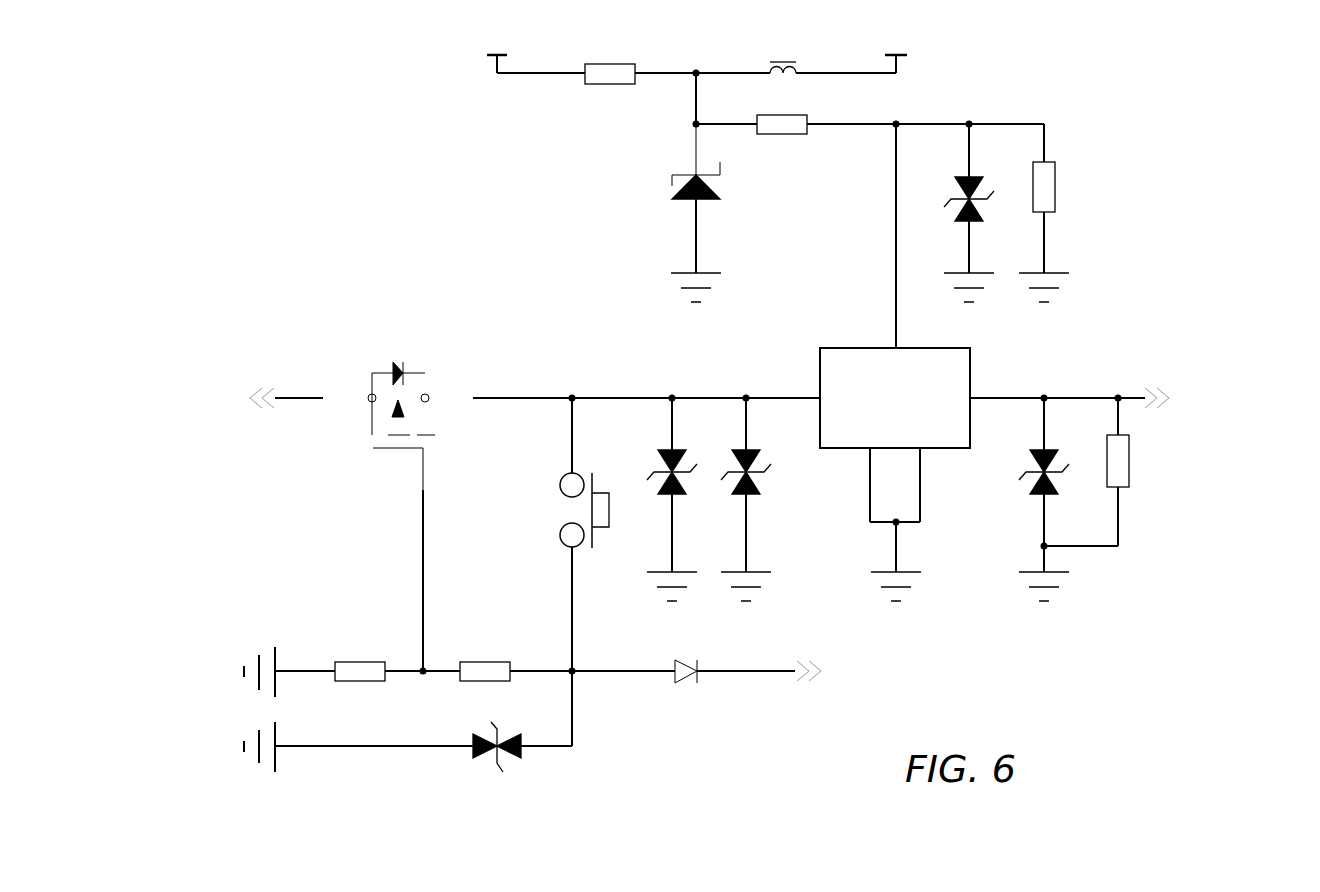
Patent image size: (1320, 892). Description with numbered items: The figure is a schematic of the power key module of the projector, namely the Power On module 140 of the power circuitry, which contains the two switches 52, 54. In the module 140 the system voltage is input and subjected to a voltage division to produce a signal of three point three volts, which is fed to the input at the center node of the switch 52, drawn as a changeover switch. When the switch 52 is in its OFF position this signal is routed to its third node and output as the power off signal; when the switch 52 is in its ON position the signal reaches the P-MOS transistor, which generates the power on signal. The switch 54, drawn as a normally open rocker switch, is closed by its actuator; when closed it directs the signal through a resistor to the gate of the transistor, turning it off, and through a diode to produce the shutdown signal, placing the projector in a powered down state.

The Power On module 140 is at (352, 168).
The switch 52 is at (820, 362).
The switch 54 is at (541, 539).